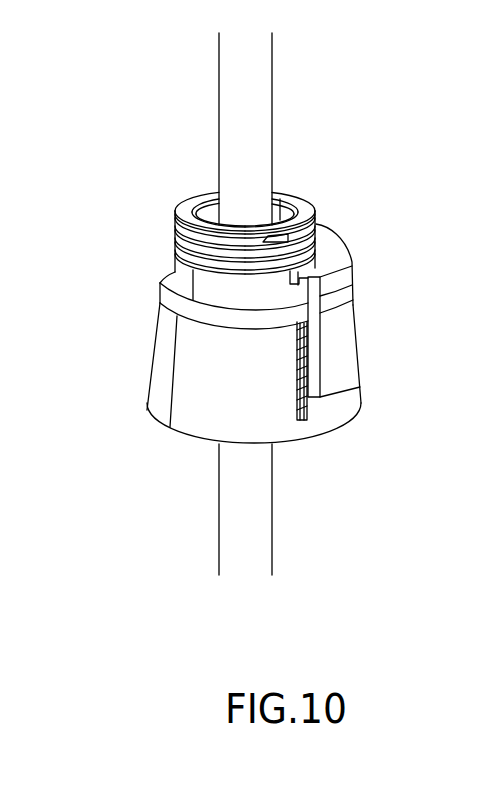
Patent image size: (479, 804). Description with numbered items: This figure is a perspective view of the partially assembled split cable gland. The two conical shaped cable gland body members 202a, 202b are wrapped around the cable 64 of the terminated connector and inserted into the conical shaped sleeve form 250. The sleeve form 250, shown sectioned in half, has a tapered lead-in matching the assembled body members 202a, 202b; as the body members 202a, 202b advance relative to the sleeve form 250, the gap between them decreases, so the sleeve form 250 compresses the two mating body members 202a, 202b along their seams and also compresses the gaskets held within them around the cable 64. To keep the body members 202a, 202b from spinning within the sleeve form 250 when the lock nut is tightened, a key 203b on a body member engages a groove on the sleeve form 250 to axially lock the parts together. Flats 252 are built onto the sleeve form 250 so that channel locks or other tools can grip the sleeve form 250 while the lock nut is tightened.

The cable 64 is at (250, 514).
The cable gland body member 202a is at (187, 203).
The cable gland body member 202b is at (307, 196).
The sleeve form 250 is at (338, 247).
The flats 252 is at (343, 362).
The key 203b is at (310, 411).